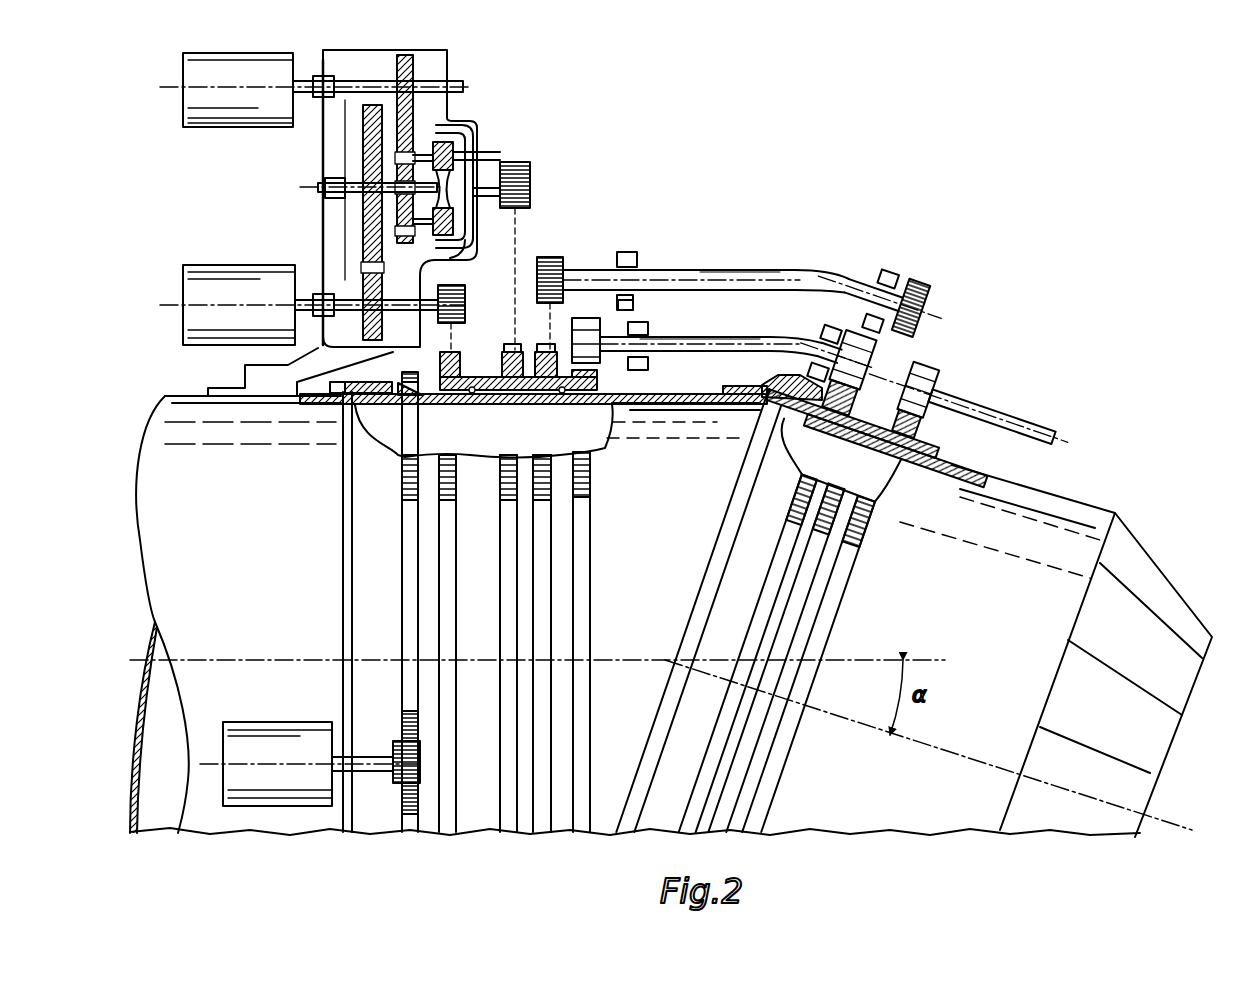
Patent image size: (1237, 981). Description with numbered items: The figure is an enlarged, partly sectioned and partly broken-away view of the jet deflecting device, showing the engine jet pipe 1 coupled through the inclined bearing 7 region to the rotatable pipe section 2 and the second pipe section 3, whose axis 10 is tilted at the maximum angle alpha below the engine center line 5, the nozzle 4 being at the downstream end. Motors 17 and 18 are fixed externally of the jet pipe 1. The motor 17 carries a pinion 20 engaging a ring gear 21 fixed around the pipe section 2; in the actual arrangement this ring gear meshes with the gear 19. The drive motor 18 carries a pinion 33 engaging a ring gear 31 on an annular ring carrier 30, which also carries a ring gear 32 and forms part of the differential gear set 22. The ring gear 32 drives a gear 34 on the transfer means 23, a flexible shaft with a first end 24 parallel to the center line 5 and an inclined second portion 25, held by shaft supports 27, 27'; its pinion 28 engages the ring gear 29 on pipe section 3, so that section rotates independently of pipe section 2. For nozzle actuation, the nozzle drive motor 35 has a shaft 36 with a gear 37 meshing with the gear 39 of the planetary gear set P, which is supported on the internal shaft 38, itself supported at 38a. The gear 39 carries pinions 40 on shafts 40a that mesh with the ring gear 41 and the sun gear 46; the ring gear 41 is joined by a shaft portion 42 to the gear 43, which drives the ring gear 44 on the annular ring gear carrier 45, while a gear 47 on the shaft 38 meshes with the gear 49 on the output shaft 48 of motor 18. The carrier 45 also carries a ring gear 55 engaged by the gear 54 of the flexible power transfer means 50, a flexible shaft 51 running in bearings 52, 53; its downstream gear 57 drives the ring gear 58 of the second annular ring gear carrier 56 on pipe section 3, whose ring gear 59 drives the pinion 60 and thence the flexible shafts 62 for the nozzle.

The engine jet pipe 1 is at (165, 545).
The pipe section 2 is at (687, 415).
The pipe section 3 is at (1068, 517).
The nozzle 4 is at (1130, 567).
The center line 5 is at (140, 667).
The bearing 7 is at (762, 408).
The axis 10 is at (862, 722).
The motor 17 is at (250, 735).
The drive motor 18 is at (193, 326).
The gear 19 is at (428, 742).
The pinion 20 is at (401, 777).
The ring gear 21 is at (398, 364).
The differential gear set 22 is at (479, 372).
The transfer means 23 is at (725, 340).
The first end 24 is at (668, 336).
The second portion 25 is at (822, 332).
The shaft support 27 is at (656, 360).
The shaft support 27' is at (777, 376).
The pinion 28 is at (862, 364).
The ring gear 29 is at (802, 414).
The annular ring carrier 30 is at (428, 391).
The ring gear 31 is at (452, 351).
The ring gear 32 is at (628, 396).
The pinion 33 is at (458, 287).
The gear 34 is at (583, 337).
The nozzle drive motor 35 is at (200, 115).
The shaft 36 is at (350, 96).
The gear 37 is at (415, 66).
The internal shaft 38 is at (357, 191).
The rotatable support 38a is at (345, 179).
The gear 39 is at (420, 145).
The pinions 40 is at (455, 156).
The shafts 40a is at (466, 126).
The ring gear 41 is at (468, 232).
The shaft portion 42 is at (478, 192).
The gear 43 is at (531, 178).
The ring gear 44 is at (515, 351).
The annular ring gear carrier 45 is at (508, 345).
The sun gear 46 is at (435, 208).
The gear 47 is at (372, 201).
The output shaft 48 is at (399, 306).
The gear 49 is at (362, 283).
The flexible power transfer means 50 is at (738, 265).
The flexible shaft 51 is at (682, 275).
The bearing 52 is at (627, 258).
The bearing 53 is at (882, 270).
The gear 54 is at (563, 262).
The ring gear 55 is at (548, 455).
The second annular ring gear carrier 56 is at (840, 426).
The gear 57 is at (928, 312).
The ring gear 58 is at (820, 566).
The ring gear 59 is at (922, 426).
The pinion 60 is at (942, 384).
The flexible shafts 62 is at (1032, 420).
The planetary gear set P is at (352, 163).